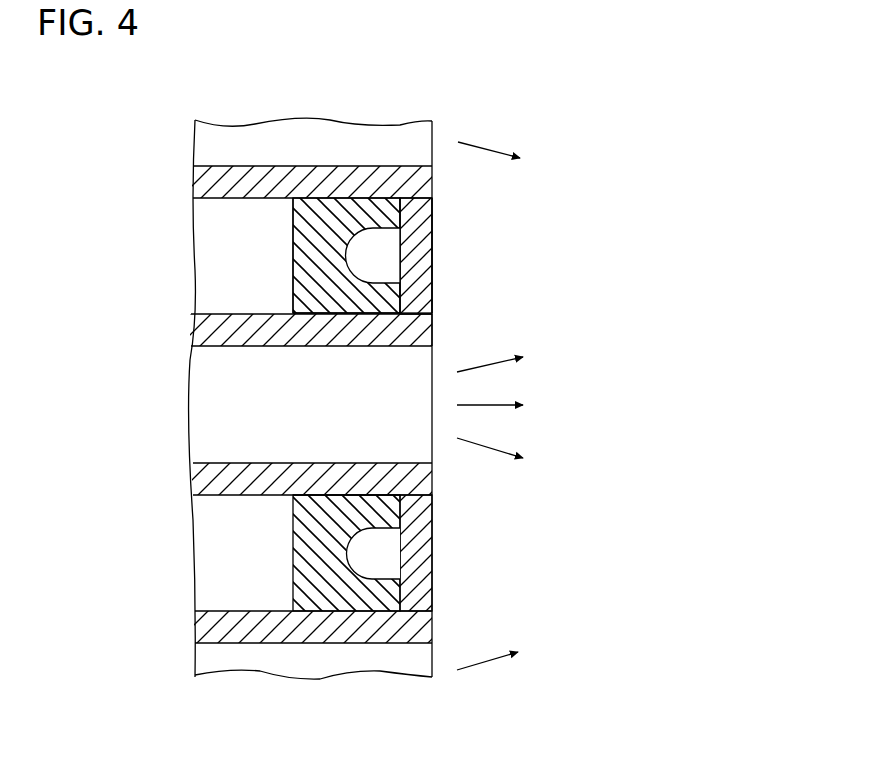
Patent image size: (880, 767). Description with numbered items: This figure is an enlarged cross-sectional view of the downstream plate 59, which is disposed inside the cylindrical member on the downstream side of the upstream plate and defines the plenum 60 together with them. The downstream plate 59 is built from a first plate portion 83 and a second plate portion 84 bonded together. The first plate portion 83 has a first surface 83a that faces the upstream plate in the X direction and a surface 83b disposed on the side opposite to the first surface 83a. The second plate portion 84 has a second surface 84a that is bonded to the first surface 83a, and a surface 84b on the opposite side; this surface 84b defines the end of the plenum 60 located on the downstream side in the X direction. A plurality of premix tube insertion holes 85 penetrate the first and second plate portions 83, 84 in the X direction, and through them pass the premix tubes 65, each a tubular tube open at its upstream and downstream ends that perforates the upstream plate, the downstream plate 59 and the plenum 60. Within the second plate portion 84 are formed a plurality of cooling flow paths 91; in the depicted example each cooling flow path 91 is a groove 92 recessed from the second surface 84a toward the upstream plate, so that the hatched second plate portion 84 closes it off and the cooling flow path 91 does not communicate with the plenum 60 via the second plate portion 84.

The plenum 60 is at (223, 210).
The downstream plate 59 is at (435, 226).
The premix tube 65 is at (186, 188).
The second plate portion 84 is at (352, 207).
The second surface 84a is at (418, 312).
The surface 84b is at (293, 297).
The first plate portion 83 is at (425, 267).
The first surface 83a is at (404, 302).
The surface 83b is at (433, 243).
The premix tube insertion hole 85 is at (420, 333).
The cooling flow path 91 is at (424, 325).
The groove 92 is at (380, 250).